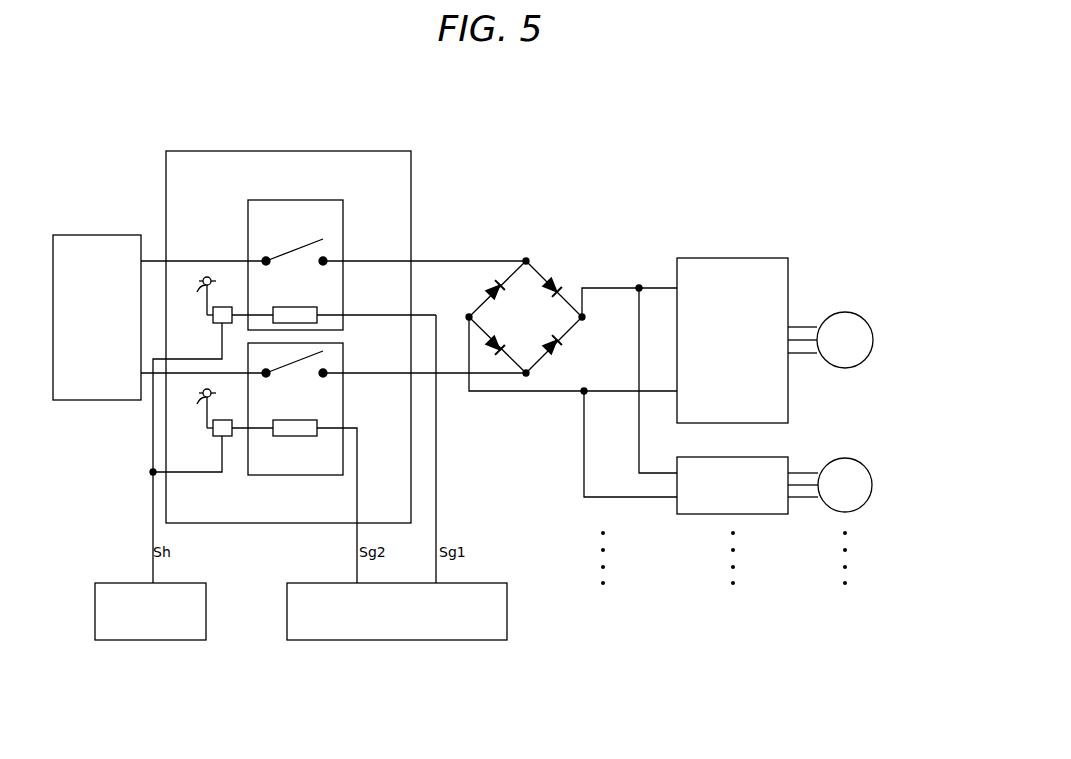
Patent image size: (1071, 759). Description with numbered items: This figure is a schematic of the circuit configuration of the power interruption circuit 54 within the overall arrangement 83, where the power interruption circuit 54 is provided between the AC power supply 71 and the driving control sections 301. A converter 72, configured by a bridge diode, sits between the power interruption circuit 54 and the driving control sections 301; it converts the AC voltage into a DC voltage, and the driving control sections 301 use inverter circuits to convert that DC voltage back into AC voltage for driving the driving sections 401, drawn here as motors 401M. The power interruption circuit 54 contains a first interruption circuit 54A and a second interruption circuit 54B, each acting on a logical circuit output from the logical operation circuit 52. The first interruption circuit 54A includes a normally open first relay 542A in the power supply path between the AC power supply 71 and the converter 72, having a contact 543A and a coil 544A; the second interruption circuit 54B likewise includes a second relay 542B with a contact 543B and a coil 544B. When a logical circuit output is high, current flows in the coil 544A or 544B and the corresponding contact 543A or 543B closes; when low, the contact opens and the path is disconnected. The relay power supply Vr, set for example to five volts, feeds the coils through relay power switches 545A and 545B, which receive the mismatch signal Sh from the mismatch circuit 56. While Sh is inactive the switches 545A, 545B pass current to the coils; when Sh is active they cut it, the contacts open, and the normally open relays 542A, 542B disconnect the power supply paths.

The power supply and drive system 83 is at (445, 128).
The power interruption circuit 54 is at (362, 151).
The first interruption circuit 54A is at (294, 383).
The second interruption circuit 54B is at (276, 463).
The first relay 542A is at (325, 265).
The contact 543A is at (293, 260).
The coil 544A is at (303, 307).
The relay power switch 545A is at (213, 320).
The second relay 542B is at (325, 409).
The contact 543B is at (293, 372).
The coil 544B is at (303, 420).
The relay power switch 545B is at (213, 433).
The AC power supply 71 is at (99, 235).
The converter 72 is at (532, 240).
The mismatch circuit 56 is at (150, 641).
The logical operation circuit 52 is at (393, 641).
The driving control section 301 is at (736, 618).
The motors 401M to 406M 401M is at (847, 618).
The driving section 401 is at (855, 514).